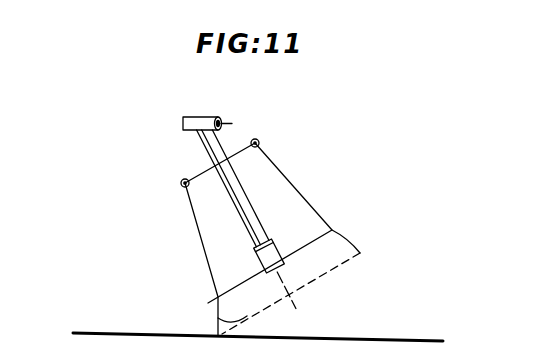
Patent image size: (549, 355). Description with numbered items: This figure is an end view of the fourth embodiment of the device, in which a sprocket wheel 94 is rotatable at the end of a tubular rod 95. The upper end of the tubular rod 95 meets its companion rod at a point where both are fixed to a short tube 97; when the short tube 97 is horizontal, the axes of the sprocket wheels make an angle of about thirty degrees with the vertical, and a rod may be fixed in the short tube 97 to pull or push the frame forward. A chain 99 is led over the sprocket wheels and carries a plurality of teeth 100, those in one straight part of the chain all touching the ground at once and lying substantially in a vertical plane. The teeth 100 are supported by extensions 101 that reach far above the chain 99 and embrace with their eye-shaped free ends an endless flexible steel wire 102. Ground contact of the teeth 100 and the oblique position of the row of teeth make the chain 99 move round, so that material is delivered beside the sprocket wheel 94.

The short tube 97 is at (195, 117).
The tubular rod 95 is at (252, 218).
The sprocket wheel 94 is at (250, 277).
The endless flexible steel wire 102 is at (200, 173).
The extensions 101 is at (204, 250).
The chain 99 is at (272, 225).
The teeth 100 is at (247, 316).